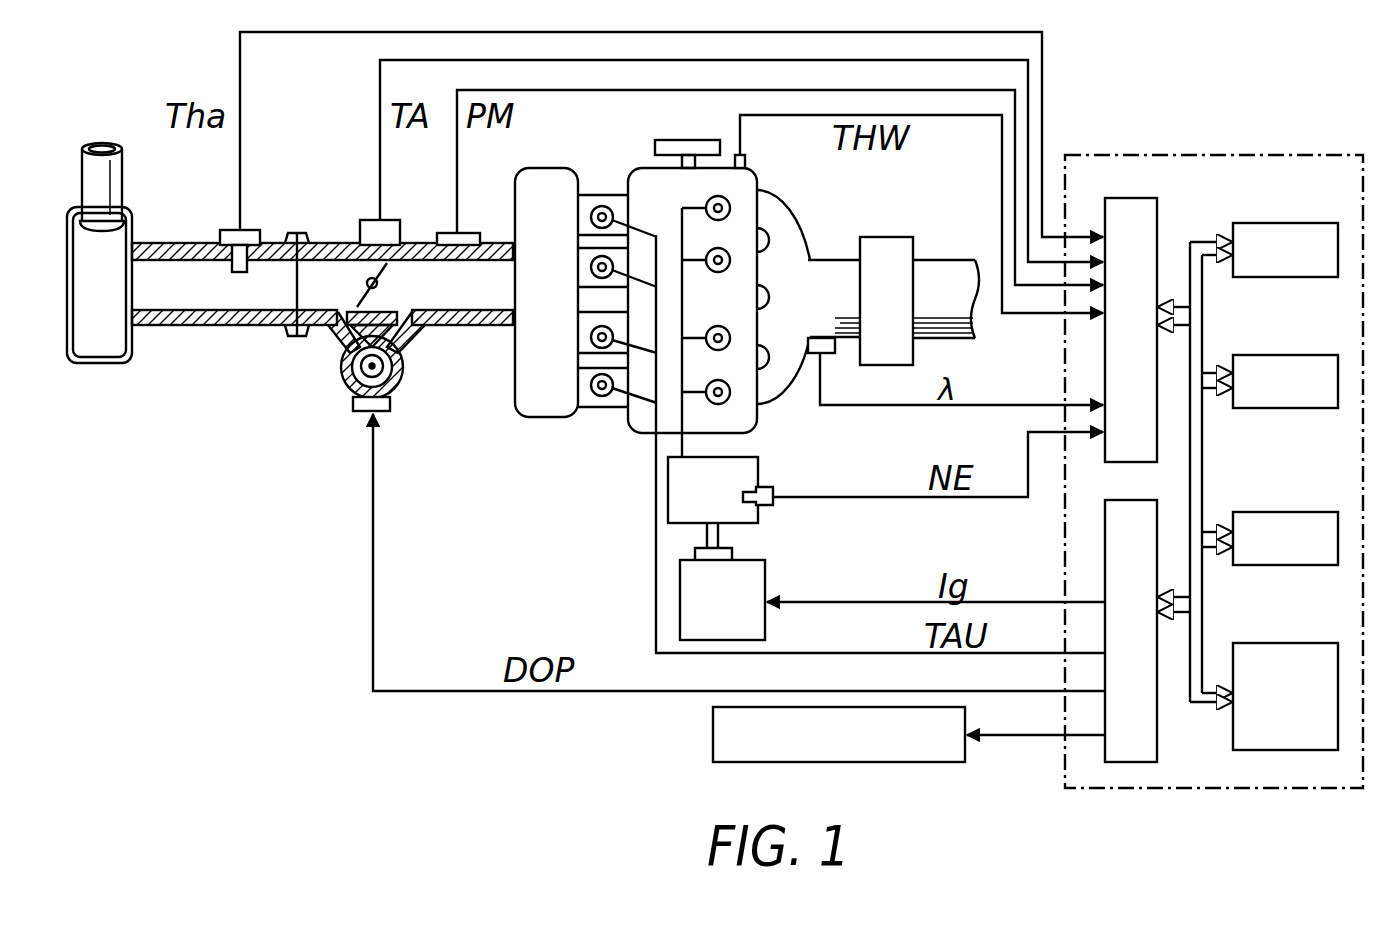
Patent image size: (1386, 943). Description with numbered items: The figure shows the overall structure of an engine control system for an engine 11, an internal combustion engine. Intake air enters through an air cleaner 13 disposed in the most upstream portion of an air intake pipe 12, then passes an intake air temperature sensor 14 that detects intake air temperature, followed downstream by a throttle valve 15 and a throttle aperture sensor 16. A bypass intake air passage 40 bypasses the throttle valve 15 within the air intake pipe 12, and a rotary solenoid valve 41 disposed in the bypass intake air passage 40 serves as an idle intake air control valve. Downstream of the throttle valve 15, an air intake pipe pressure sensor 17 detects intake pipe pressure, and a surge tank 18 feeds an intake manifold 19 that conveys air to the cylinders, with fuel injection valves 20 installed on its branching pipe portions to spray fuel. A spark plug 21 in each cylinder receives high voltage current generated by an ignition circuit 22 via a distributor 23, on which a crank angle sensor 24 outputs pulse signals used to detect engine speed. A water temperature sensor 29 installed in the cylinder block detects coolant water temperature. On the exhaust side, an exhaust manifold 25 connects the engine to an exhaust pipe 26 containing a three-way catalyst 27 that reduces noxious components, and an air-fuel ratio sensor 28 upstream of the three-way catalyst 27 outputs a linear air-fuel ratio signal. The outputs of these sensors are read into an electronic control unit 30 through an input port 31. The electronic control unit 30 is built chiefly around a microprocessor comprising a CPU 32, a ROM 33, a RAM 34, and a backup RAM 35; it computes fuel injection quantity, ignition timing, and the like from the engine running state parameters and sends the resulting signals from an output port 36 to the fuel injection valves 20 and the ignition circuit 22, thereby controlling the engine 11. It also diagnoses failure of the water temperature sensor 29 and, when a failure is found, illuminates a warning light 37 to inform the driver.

The engine 11 is at (758, 418).
The air intake pipe 12 is at (473, 327).
The air cleaner 13 is at (103, 364).
The intake air temperature sensor 14 is at (233, 275).
The throttle valve 15 is at (368, 253).
The throttle aperture sensor 16 is at (370, 220).
The air intake pipe pressure sensor 17 is at (453, 233).
The surge tank 18 is at (530, 418).
The intake manifold 19 is at (585, 406).
The fuel injection valves 20 is at (602, 205).
The spark plug 21 is at (730, 200).
The ignition circuit 22 is at (766, 626).
The distributor 23 is at (750, 523).
The crank angle sensor 24 is at (770, 505).
The exhaust manifold 25 is at (793, 213).
The exhaust pipe 26 is at (956, 260).
The three-way catalyst 27 is at (895, 237).
The air-fuel ratio sensor 28 is at (835, 356).
The water temperature sensor 29 is at (738, 155).
The electronic control unit 30 is at (1214, 446).
The input port 31 is at (1160, 209).
The CPU 32 is at (1310, 223).
The ROM 33 is at (1310, 355).
The RAM 34 is at (1310, 512).
The backup RAM 35 is at (1310, 643).
The output port 36 is at (1160, 750).
The warning light 37 is at (713, 718).
The bypass intake air passage 40 is at (338, 334).
The rotary solenoid valve 41 is at (403, 376).